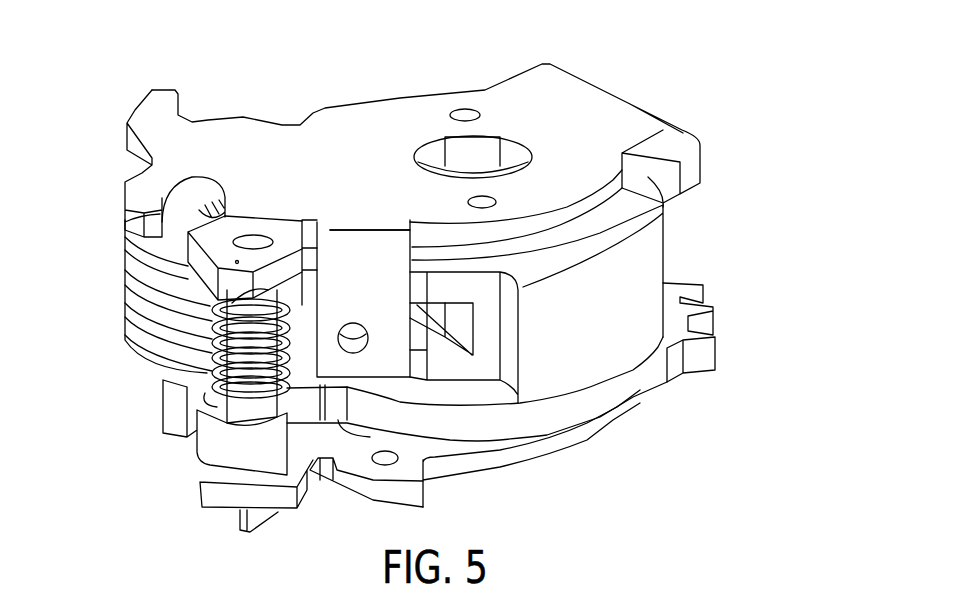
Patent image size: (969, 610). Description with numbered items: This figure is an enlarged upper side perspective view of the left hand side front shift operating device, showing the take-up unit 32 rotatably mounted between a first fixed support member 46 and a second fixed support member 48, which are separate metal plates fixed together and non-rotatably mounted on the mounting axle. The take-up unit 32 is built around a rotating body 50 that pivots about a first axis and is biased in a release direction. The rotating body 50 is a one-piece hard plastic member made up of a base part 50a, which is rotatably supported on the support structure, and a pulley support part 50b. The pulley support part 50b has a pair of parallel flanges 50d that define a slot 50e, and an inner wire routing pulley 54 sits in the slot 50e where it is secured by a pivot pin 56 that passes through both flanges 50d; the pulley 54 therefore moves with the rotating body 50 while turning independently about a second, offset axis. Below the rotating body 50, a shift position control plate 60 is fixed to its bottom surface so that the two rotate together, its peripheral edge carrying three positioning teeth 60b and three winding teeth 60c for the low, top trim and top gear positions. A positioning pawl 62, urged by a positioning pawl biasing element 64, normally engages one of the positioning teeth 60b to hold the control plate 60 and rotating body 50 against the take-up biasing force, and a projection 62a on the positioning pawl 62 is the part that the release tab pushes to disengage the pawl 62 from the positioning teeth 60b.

The take-up unit 32 is at (735, 127).
The first fixed support member 46 is at (585, 82).
The second fixed support member 48 is at (553, 460).
The rotating body 50 is at (664, 258).
The base part 50a is at (634, 222).
The pulley support part 50b is at (187, 220).
The parallel flanges 50d is at (134, 252).
The slot 50e is at (428, 313).
The inner wire routing pulley 54 is at (127, 311).
The pivot pin 56 is at (213, 178).
The shift position control plate 60 is at (650, 401).
The positioning teeth 60b is at (300, 410).
The winding teeth 60c is at (713, 310).
The positioning pawl 62 is at (197, 453).
The projection 62a is at (250, 522).
The positioning pawl biasing element 64 is at (258, 395).